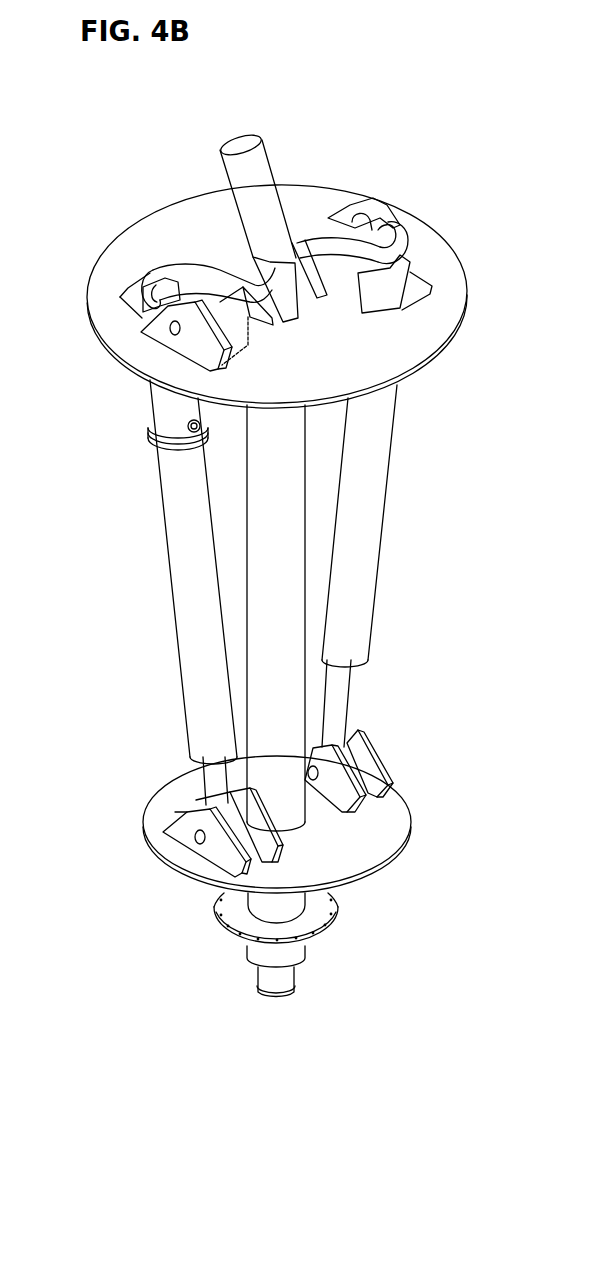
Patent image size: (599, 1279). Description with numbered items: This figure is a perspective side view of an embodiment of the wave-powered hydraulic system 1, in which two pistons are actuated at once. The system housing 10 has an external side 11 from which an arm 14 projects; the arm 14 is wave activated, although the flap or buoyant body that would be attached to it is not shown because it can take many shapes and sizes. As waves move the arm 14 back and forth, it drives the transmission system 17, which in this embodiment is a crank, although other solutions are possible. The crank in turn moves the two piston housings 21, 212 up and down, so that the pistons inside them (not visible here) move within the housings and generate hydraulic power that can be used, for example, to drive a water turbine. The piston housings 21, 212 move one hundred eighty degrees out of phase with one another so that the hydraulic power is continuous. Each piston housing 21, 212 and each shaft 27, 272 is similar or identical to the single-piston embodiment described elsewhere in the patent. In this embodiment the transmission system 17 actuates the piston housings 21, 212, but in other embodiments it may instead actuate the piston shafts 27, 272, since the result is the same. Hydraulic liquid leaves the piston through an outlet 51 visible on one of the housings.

The system 1 is at (310, 106).
The system housing 10 is at (402, 893).
The external side 11 is at (138, 250).
The arm 14 is at (238, 148).
The transmission system 17 is at (345, 275).
The piston housing 21 is at (168, 559).
The piston housing 212 is at (370, 538).
The shaft 27 is at (203, 788).
The shaft 272 is at (352, 691).
The outlet 51 is at (197, 425).